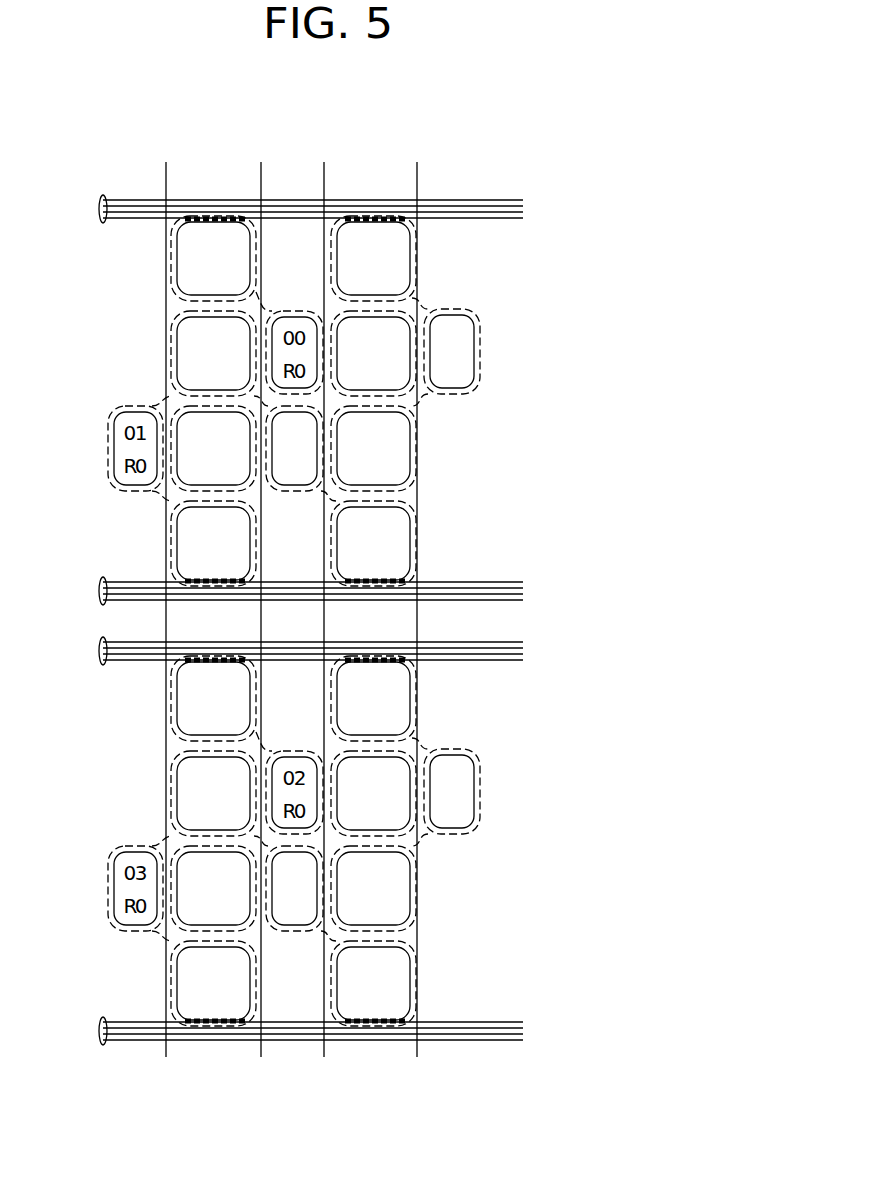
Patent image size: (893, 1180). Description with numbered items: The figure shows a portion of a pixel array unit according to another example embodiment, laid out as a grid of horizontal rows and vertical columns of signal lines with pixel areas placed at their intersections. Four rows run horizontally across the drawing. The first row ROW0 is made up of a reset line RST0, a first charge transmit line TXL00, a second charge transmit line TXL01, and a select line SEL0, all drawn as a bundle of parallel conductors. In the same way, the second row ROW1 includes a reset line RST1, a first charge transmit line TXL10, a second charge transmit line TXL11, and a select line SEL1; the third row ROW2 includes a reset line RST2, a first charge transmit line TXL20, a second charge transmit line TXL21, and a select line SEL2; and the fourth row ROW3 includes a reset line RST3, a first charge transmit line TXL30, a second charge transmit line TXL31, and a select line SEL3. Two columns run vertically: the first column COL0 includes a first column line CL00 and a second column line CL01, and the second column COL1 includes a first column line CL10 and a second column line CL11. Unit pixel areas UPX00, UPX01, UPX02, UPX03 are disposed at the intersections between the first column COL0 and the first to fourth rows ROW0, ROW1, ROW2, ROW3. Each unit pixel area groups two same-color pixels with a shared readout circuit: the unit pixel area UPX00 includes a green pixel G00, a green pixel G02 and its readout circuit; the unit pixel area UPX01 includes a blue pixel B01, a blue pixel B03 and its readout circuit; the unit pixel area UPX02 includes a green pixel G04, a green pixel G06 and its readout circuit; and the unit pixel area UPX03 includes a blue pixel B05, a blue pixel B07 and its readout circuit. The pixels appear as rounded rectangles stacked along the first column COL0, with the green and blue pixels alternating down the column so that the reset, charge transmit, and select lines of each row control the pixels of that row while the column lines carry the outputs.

The first column COL0 is at (220, 610).
The second column COL1 is at (376, 610).
The second column line CL01 is at (171, 624).
The first column line CL00 is at (268, 624).
The second column line CL11 is at (330, 624).
The first column line CL10 is at (421, 624).
The first row ROW0 is at (324, 210).
The second row ROW1 is at (332, 576).
The third row ROW2 is at (332, 673).
The fourth row ROW3 is at (332, 1019).
The reset line RST0 is at (523, 200).
The reset line RST1 is at (523, 600).
The reset line RST2 is at (523, 642).
The reset line RST3 is at (523, 1040).
The select line SEL0 is at (523, 218).
The select line SEL1 is at (523, 582).
The select line SEL2 is at (523, 660).
The select line SEL3 is at (523, 1022).
The first charge transmit line TXL00 is at (523, 212).
The second charge transmit line TXL01 is at (523, 206).
The first charge transmit line TXL10 is at (523, 588).
The second charge transmit line TXL11 is at (523, 594).
The first charge transmit line TXL20 is at (523, 654).
The second charge transmit line TXL21 is at (523, 648).
The first charge transmit line TXL30 is at (523, 1028).
The second charge transmit line TXL31 is at (523, 1034).
The unit pixel area UPX00 is at (171, 267).
The unit pixel area UPX01 is at (171, 536).
The unit pixel area UPX02 is at (171, 698).
The unit pixel area UPX03 is at (171, 976).
The green pixel G00 is at (213, 258).
The blue pixel B01 is at (213, 353).
The green pixel G02 is at (213, 448).
The blue pixel B03 is at (213, 543).
The green pixel G04 is at (213, 698).
The blue pixel B05 is at (213, 793).
The green pixel G06 is at (213, 888).
The blue pixel B07 is at (213, 983).